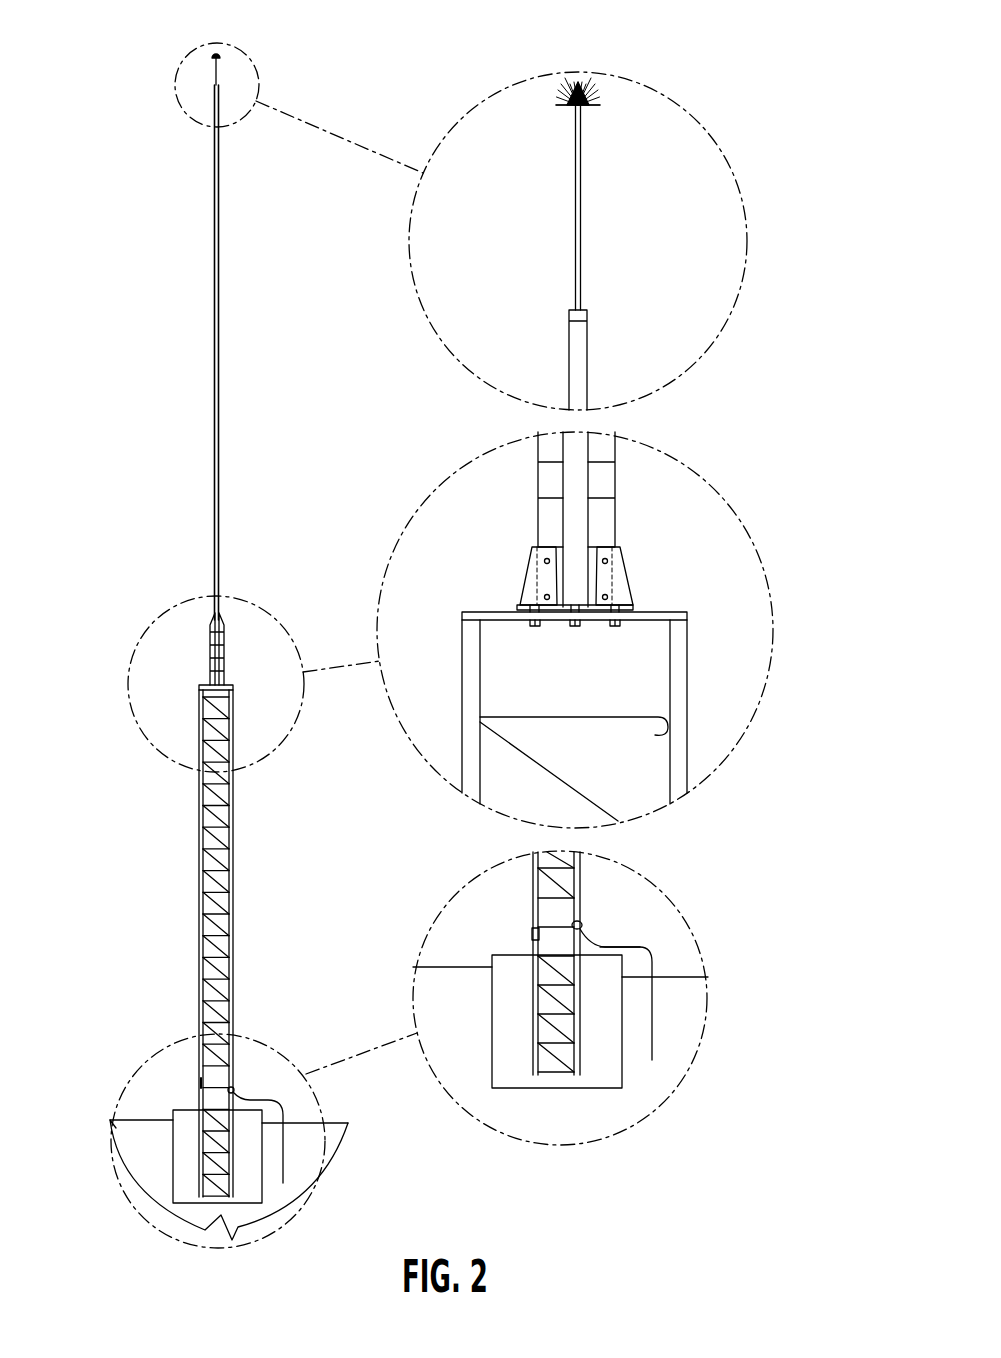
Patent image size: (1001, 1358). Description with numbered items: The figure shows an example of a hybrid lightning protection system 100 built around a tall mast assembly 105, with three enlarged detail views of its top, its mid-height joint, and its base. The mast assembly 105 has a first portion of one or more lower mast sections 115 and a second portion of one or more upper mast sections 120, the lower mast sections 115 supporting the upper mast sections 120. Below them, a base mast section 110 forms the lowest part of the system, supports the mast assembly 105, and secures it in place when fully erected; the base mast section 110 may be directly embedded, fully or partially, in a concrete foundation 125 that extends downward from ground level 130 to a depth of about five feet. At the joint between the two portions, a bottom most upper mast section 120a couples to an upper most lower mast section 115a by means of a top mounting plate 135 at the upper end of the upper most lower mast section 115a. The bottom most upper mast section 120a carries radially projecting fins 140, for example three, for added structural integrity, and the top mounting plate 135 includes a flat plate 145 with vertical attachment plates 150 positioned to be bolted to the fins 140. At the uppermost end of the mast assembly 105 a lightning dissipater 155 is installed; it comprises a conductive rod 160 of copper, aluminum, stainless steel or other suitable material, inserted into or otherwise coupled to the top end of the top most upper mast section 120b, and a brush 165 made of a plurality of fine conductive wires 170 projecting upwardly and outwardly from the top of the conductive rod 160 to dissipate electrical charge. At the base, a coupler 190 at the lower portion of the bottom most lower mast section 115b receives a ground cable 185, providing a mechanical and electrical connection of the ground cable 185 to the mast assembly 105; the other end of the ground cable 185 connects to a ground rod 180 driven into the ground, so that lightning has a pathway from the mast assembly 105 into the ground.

The hybrid lightning protection system 100 is at (102, 78).
The mast assembly 105 is at (174, 475).
The base mast section 110 is at (200, 1143).
The lower mast sections 115 is at (250, 837).
The upper most lower mast section 115a is at (688, 679).
The bottom most lower mast section 115b is at (532, 898).
The upper mast sections 120 is at (234, 357).
The bottom most upper mast section 120a is at (577, 490).
The top most upper mast section 120b is at (582, 340).
The foundation 125 is at (262, 1156).
The ground level 130 is at (445, 967).
The top mounting plate 135 is at (654, 590).
The radially projecting fins 140 is at (535, 465).
The flat plate 145 is at (521, 607).
The vertical attachment plates 150 is at (525, 582).
The lightning dissipater 155 is at (232, 75).
The conductive rod 160 is at (581, 213).
The brush 165 is at (585, 72).
The fine conductive wires 170 is at (600, 99).
The ground rod 180 is at (652, 1040).
The ground cable 185 is at (641, 947).
The coupler 190 is at (583, 925).